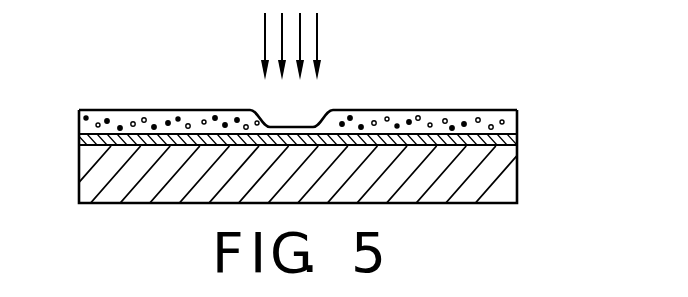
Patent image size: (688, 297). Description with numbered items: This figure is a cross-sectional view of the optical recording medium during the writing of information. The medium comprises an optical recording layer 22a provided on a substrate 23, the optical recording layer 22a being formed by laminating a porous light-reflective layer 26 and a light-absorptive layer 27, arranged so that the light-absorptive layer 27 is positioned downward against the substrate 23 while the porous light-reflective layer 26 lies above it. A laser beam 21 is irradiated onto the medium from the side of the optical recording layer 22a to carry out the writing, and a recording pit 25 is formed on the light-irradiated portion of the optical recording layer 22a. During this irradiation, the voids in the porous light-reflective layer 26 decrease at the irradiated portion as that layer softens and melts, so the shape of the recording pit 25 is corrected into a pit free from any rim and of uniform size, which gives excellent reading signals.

The laser beam 21 is at (318, 35).
The optical recording layer 22a is at (70, 113).
The substrate 23 is at (507, 170).
The recording pit 25 is at (288, 117).
The porous light-reflective layer 26 is at (517, 120).
The light-absorptive layer 27 is at (517, 138).